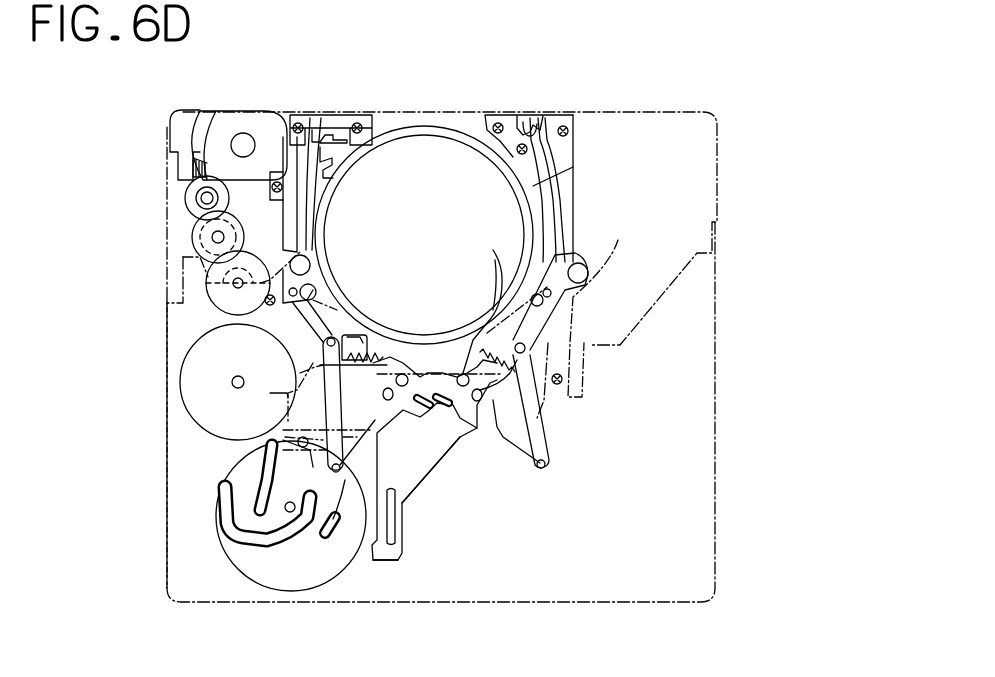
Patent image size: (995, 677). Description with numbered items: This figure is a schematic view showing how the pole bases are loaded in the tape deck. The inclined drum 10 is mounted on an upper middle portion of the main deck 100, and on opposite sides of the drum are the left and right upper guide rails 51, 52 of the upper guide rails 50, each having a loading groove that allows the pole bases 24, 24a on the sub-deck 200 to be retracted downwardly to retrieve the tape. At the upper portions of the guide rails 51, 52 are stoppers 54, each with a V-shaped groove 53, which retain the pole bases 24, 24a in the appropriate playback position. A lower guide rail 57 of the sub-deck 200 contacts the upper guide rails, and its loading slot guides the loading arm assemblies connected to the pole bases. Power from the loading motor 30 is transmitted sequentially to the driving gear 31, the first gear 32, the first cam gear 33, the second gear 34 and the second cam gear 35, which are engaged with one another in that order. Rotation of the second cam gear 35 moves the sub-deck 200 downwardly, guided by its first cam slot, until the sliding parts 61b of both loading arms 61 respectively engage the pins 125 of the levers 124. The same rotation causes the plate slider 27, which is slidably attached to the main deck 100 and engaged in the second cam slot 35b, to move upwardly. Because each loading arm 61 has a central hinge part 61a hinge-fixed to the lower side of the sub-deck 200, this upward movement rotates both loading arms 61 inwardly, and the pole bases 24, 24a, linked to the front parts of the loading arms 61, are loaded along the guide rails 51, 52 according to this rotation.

The inclined drum 10 is at (434, 250).
The pole base 24 is at (313, 272).
The pole base 24a is at (553, 263).
The plate slider 27 is at (427, 470).
The loading motor 30 is at (225, 122).
The driving gear 31 is at (187, 197).
The first gear 32 is at (197, 240).
The first cam gear 33 is at (213, 298).
The second gear 34 is at (190, 400).
The second cam gear 35 is at (268, 573).
The second cam slot 35b is at (337, 513).
The upper guide rails 50 is at (442, 58).
The left upper guide rail 51 is at (373, 120).
The right upper guide rail 52 is at (490, 126).
The V-shaped groove 53 is at (313, 124).
The stopper 54 is at (333, 125).
The lower guide rail 57 is at (604, 307).
The loading arm 61 is at (497, 427).
The central hinge part 61a is at (477, 430).
The sliding part 61b is at (500, 290).
The main deck 100 is at (662, 120).
The lever 124 is at (458, 374).
The pin 125 is at (408, 374).
The sub-deck 200 is at (167, 523).